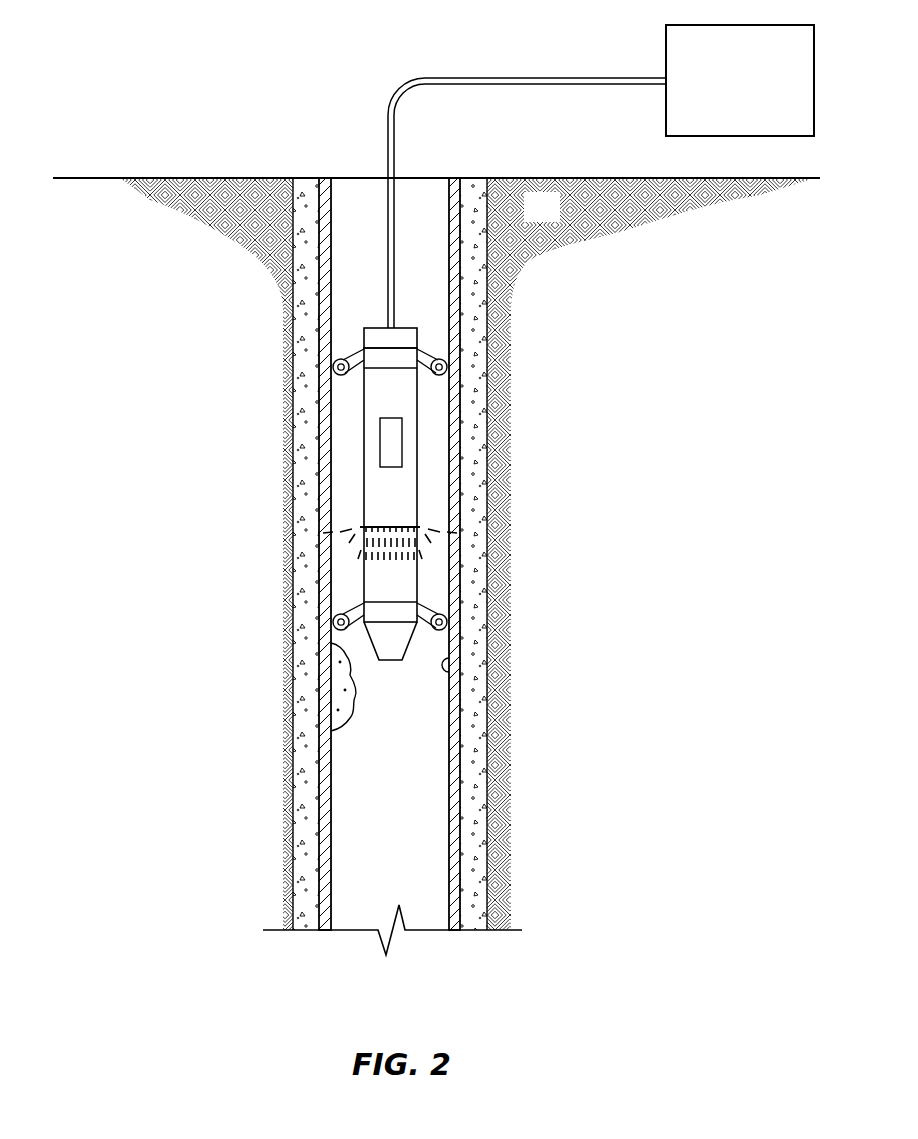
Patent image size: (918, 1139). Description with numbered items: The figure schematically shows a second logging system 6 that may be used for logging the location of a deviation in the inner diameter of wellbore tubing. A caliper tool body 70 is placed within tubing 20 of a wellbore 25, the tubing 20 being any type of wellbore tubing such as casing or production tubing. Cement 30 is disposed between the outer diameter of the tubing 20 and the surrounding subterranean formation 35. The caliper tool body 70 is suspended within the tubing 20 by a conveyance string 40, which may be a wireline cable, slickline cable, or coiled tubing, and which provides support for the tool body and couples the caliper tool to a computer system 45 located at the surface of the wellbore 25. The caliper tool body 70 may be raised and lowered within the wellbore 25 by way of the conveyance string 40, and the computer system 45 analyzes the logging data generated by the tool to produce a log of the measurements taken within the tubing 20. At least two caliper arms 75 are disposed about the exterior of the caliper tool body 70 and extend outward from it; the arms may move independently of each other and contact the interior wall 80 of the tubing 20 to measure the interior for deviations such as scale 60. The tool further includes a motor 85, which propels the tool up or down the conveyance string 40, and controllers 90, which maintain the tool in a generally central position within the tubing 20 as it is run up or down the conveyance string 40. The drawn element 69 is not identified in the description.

The second logging system 6 is at (339, 157).
The tubing 20 is at (323, 418).
The wellbore 25 is at (440, 742).
The cement 30 is at (306, 462).
The subterranean formation 35 is at (558, 220).
The conveyance string 40 is at (395, 135).
The computer system 45 is at (815, 80).
The scale 60 is at (348, 687).
The tool head 69 is at (364, 338).
The caliper tool body 70 is at (412, 490).
The caliper arms 75 is at (348, 547).
The interior wall 80 is at (446, 666).
The motor 85 is at (400, 447).
The controllers 90 is at (333, 367).